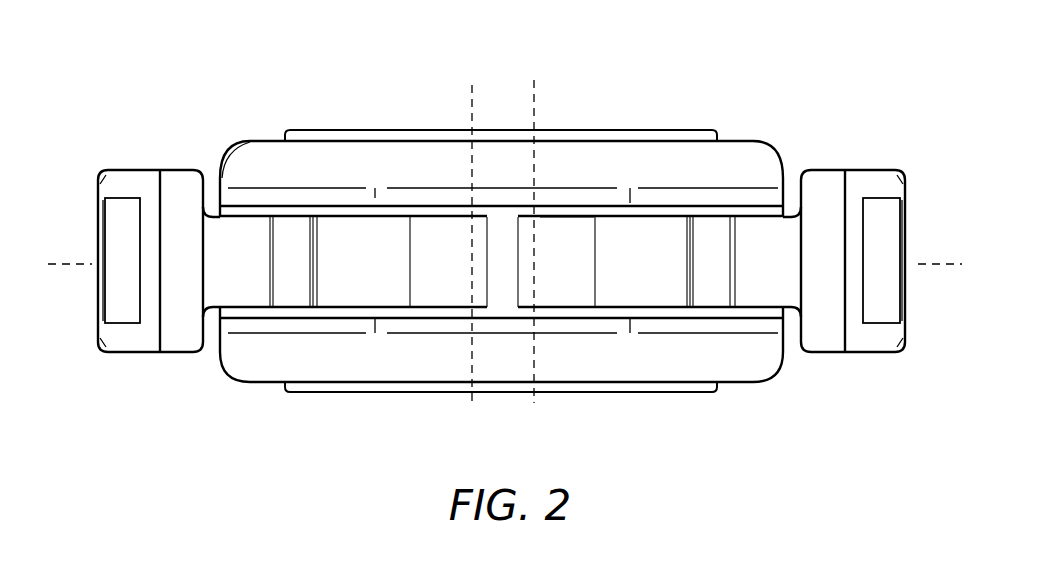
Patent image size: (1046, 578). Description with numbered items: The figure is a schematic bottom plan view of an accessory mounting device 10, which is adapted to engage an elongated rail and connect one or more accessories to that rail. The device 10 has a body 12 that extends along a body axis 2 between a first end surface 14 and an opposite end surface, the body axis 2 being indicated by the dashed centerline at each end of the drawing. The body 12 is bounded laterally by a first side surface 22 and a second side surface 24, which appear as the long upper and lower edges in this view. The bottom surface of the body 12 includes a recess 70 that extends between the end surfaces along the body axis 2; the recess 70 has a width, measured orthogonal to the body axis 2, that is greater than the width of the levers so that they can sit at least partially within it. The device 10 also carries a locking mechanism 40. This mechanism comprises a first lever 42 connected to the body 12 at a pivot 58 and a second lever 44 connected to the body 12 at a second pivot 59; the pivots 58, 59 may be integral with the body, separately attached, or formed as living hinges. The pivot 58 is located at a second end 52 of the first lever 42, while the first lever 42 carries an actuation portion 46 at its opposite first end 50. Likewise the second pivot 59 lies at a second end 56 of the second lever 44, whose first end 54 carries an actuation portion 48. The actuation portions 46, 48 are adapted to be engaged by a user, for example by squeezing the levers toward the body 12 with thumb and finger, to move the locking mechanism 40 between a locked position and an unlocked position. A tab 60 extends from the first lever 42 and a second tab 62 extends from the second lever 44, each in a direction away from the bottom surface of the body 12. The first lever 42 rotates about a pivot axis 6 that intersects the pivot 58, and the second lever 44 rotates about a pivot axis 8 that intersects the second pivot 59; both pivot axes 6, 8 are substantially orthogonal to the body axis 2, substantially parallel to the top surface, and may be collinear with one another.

The body axis 2 is at (58, 262).
The pivot axis 6 is at (470, 103).
The pivot axis 8 is at (536, 103).
The accessory mounting device 10 is at (775, 46).
The body 12 is at (346, 108).
The first end surface 14 is at (501, 382).
The first side surface 22 is at (673, 130).
The second side surface 24 is at (670, 393).
The locking mechanism 40 is at (141, 378).
The first lever 42 is at (137, 150).
The second lever 44 is at (847, 151).
The actuation portion 46 is at (107, 345).
The actuation portion 48 is at (880, 346).
The first end 50 is at (203, 322).
The second end 52 is at (437, 288).
The first end 54 is at (793, 310).
The second end 56 is at (557, 217).
The pivot 58 is at (471, 227).
The second pivot 59 is at (530, 302).
The tab 60 is at (297, 238).
The second tab 62 is at (712, 272).
The recess 70 is at (253, 190).